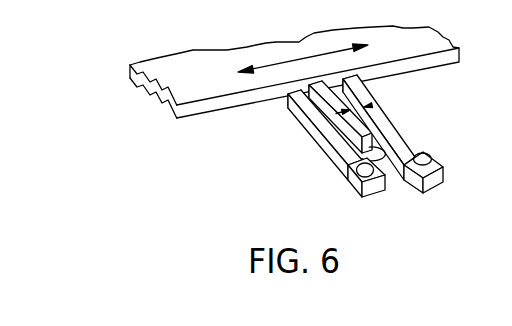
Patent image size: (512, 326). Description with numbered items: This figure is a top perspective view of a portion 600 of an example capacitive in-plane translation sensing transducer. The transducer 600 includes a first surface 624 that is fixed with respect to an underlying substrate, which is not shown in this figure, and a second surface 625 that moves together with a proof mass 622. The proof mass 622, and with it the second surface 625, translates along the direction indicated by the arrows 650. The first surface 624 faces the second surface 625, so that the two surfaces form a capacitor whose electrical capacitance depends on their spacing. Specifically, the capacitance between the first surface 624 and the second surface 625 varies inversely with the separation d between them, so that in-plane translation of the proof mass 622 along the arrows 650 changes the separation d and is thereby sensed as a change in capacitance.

The portion of capacitive in-plane translation sensing transducer 600 is at (113, 42).
The proof mass 622 is at (160, 65).
The arrows 650 is at (299, 62).
The first surface 624 is at (397, 148).
The second surface 625 is at (350, 165).
The separation d is at (364, 107).